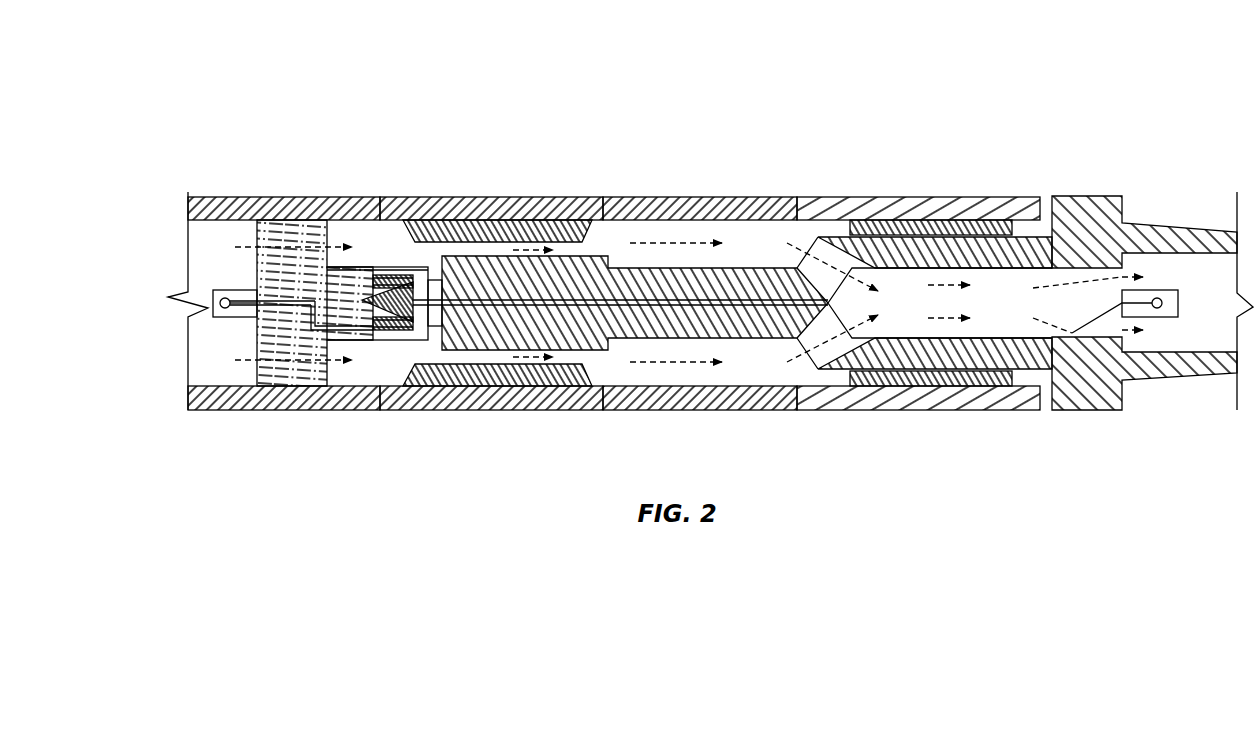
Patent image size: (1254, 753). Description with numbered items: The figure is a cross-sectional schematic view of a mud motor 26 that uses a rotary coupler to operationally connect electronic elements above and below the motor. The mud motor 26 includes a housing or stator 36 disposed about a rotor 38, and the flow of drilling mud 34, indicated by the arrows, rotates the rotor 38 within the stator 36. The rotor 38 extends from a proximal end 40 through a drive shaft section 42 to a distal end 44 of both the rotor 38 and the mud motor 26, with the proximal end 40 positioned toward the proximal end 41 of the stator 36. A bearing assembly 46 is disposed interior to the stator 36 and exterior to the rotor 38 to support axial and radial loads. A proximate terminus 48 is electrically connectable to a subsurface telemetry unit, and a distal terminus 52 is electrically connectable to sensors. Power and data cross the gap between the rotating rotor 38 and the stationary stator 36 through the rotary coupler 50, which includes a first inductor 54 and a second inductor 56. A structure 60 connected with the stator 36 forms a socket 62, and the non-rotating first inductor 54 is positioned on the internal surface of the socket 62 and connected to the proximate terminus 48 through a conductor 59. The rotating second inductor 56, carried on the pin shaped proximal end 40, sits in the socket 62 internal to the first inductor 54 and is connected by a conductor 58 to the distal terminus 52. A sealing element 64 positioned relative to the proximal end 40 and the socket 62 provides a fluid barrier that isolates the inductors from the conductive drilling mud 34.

The mud motor 26 is at (833, 76).
The drilling mud 34 is at (343, 360).
The stator 36 is at (366, 215).
The rotor 38 is at (560, 268).
The proximal end 40 is at (435, 277).
The proximal end of stator 41 is at (198, 222).
The drive shaft section 42 is at (892, 362).
The distal end 44 is at (1115, 212).
The bearing assembly 46 is at (973, 225).
The proximate terminus 48 is at (223, 313).
The rotary coupler 50 is at (392, 368).
The distal terminus 52 is at (1157, 308).
The first inductor 54 is at (412, 273).
The second inductor 56 is at (400, 333).
The conductor 58 is at (735, 298).
The conductor 59 is at (283, 300).
The structure 60 is at (268, 287).
The socket 62 is at (372, 280).
The sealing element 64 is at (415, 325).